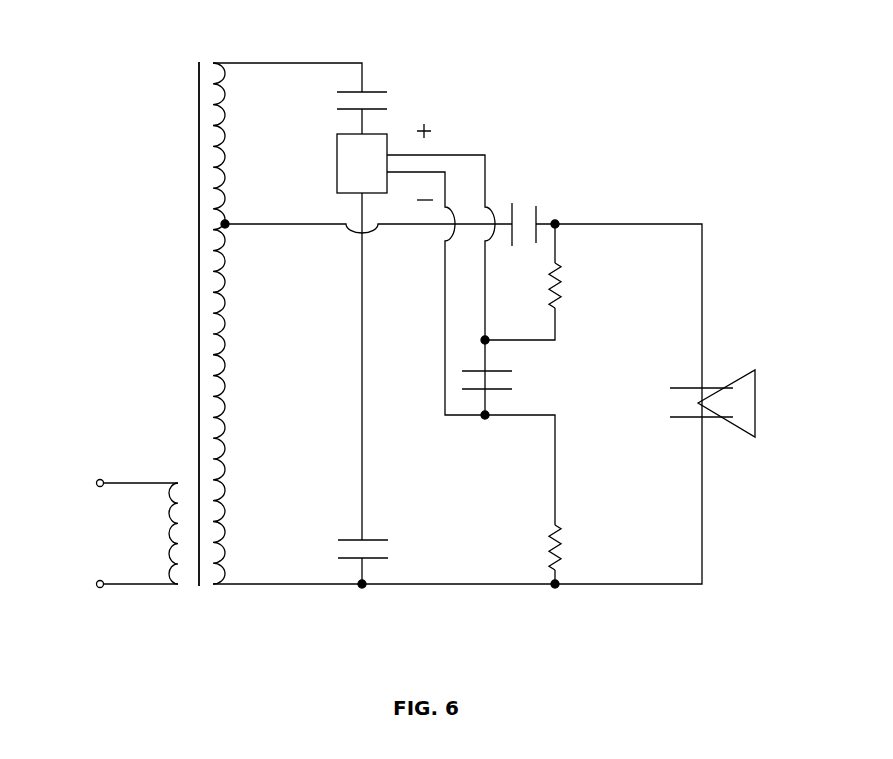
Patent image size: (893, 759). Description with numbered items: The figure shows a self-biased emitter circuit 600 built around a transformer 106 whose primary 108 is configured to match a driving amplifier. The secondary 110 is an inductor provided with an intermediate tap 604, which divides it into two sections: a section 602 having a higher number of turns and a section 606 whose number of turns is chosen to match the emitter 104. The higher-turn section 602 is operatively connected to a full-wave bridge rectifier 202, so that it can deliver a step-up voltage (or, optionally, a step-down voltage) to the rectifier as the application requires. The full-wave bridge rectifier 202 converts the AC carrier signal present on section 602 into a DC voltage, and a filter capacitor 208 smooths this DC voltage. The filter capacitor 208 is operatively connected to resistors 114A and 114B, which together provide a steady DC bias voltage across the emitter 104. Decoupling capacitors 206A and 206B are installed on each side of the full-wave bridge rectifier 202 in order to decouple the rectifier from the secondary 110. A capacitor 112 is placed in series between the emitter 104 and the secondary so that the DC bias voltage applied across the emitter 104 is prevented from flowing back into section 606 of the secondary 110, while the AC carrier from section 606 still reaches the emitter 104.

The self-biased emitter circuit 600 is at (93, 131).
The intermediate tap 604 is at (221, 224).
The section 602 is at (238, 175).
The section 606 is at (238, 435).
The decoupling capacitor 206A is at (367, 98).
The full-wave bridge rectifier 202 is at (377, 162).
The capacitor 112 is at (522, 205).
The resistor 114A is at (560, 288).
The emitter 104 is at (745, 378).
The filter capacitor 208 is at (515, 378).
The resistor 114B is at (559, 540).
The decoupling capacitor 206B is at (377, 560).
The primary 108 is at (178, 480).
The transformer core 106 is at (198, 600).
The secondary 110 is at (269, 354).